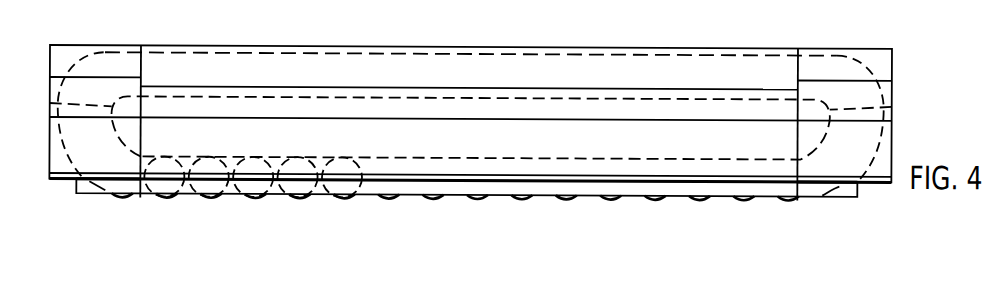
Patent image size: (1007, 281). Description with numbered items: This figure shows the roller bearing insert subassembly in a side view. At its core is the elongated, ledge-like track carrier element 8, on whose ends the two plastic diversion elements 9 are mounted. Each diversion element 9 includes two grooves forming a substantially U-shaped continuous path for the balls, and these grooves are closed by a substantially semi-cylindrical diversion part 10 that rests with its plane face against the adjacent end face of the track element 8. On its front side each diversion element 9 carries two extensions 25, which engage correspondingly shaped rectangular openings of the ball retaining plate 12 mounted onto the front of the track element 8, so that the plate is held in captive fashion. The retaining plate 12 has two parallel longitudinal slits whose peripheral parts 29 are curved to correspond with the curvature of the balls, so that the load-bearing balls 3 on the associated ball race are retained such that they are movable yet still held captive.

The load-bearing balls 3 is at (297, 197).
The track carrier element 8 is at (327, 127).
The diversion element 9 is at (74, 62).
The diversion part 10 is at (52, 103).
The ball retaining plate 12 is at (595, 177).
The extension 25 is at (98, 184).
The peripheral part 29 is at (462, 183).